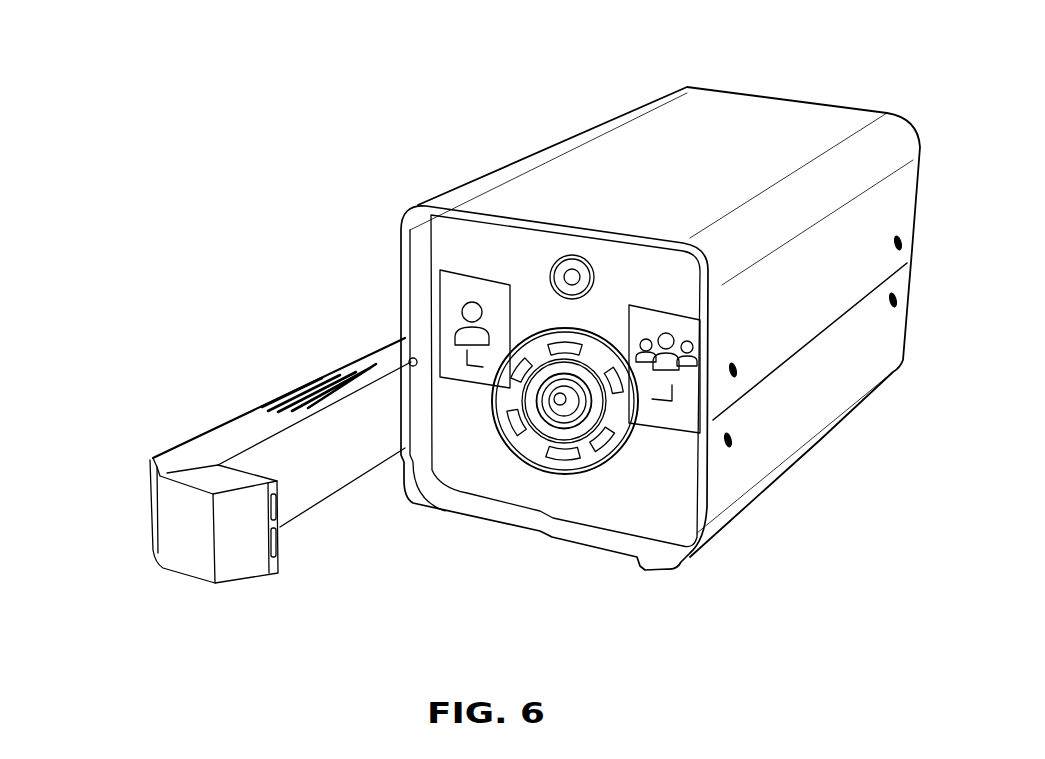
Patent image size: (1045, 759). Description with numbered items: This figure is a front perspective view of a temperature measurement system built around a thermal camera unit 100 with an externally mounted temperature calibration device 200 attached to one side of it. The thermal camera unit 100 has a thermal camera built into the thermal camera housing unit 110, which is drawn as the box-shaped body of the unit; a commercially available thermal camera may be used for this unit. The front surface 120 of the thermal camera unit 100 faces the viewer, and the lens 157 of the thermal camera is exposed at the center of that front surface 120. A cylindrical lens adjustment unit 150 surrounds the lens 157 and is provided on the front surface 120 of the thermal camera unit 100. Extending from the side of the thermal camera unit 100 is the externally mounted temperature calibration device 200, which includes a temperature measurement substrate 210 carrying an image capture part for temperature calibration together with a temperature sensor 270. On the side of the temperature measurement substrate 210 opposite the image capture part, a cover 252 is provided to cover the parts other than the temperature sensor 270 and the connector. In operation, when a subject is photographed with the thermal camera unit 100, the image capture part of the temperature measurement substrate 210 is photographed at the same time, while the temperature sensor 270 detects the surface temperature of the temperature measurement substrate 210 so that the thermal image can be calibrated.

The thermal camera unit 100 is at (484, 344).
The thermal camera housing unit 110 is at (727, 132).
The front surface 120 is at (472, 448).
The lens adjustment unit 150 is at (610, 346).
The lens 157 is at (554, 386).
The externally mounted temperature calibration device 200 is at (233, 485).
The temperature measurement substrate 210 is at (163, 555).
The cover 252 is at (193, 556).
The temperature sensor 270 is at (245, 555).